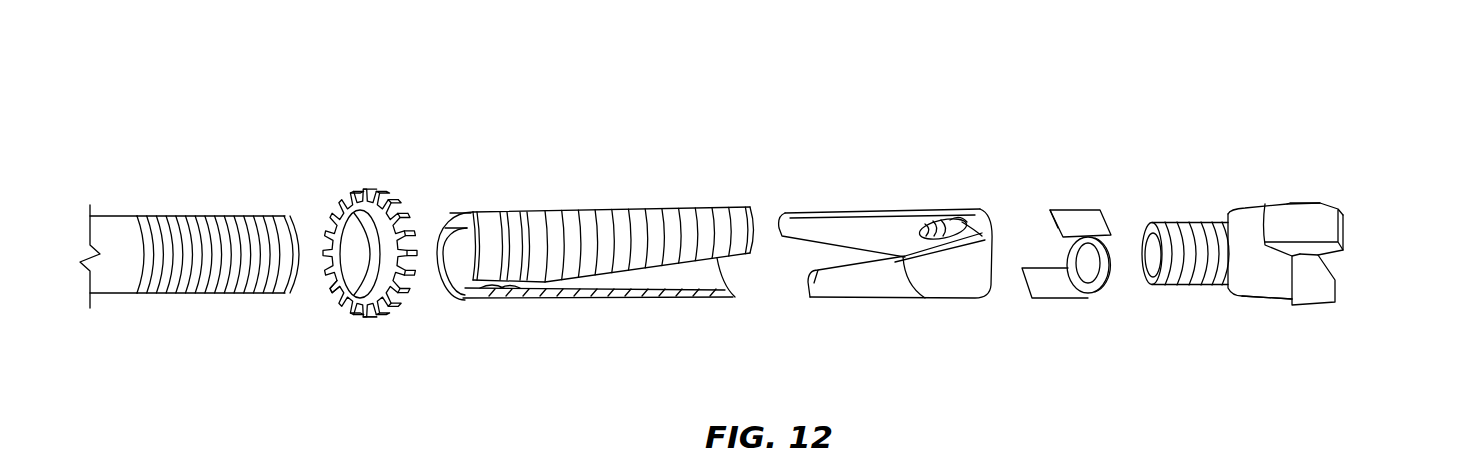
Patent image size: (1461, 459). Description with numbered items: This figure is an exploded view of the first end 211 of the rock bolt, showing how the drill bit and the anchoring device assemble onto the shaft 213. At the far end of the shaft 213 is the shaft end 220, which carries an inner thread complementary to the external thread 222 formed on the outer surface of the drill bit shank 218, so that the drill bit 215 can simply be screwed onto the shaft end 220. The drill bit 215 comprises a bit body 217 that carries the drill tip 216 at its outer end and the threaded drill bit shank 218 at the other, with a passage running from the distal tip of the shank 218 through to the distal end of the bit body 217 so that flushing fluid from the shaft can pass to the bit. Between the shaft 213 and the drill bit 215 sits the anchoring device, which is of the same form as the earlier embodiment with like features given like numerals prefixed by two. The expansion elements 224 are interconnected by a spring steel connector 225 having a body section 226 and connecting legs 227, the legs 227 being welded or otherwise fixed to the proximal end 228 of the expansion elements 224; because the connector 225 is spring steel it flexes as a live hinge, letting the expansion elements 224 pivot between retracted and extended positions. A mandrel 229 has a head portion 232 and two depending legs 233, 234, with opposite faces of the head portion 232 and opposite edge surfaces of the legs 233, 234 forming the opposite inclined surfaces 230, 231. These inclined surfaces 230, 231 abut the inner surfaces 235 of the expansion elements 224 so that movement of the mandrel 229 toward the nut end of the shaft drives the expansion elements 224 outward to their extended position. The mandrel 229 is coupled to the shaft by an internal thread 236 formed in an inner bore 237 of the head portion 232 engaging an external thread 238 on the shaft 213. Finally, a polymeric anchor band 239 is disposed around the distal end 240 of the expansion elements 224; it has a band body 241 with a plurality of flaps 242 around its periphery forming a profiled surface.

The clip assembly 211 is at (800, 110).
The shaft 213 is at (155, 162).
The drill bit 215 is at (1300, 172).
The drill tip 216 is at (1342, 230).
The bit body 217 is at (1270, 300).
The drill bit shank 218 is at (1223, 210).
The shaft end 220 is at (287, 216).
The external thread 222 is at (1190, 258).
The expansion elements 224 is at (620, 215).
The connector 225 is at (1131, 110).
The body section 226 is at (1100, 290).
The connecting legs 227 is at (1088, 225).
The proximal end 228 is at (737, 215).
The mandrel 229 is at (1003, 110).
The inclined surface 230 is at (930, 215).
The inclined surface 231 is at (925, 300).
The head portion 232 is at (985, 218).
The leg 233 is at (813, 218).
The leg 234 is at (832, 290).
The inner surfaces 235 is at (680, 283).
The internal thread 236 is at (955, 218).
The inner bore 237 is at (1040, 218).
The external thread 238 is at (197, 216).
The anchor band 239 is at (409, 162).
The distal end 240 is at (490, 215).
The band body 241 is at (347, 293).
The flaps 242 is at (377, 317).